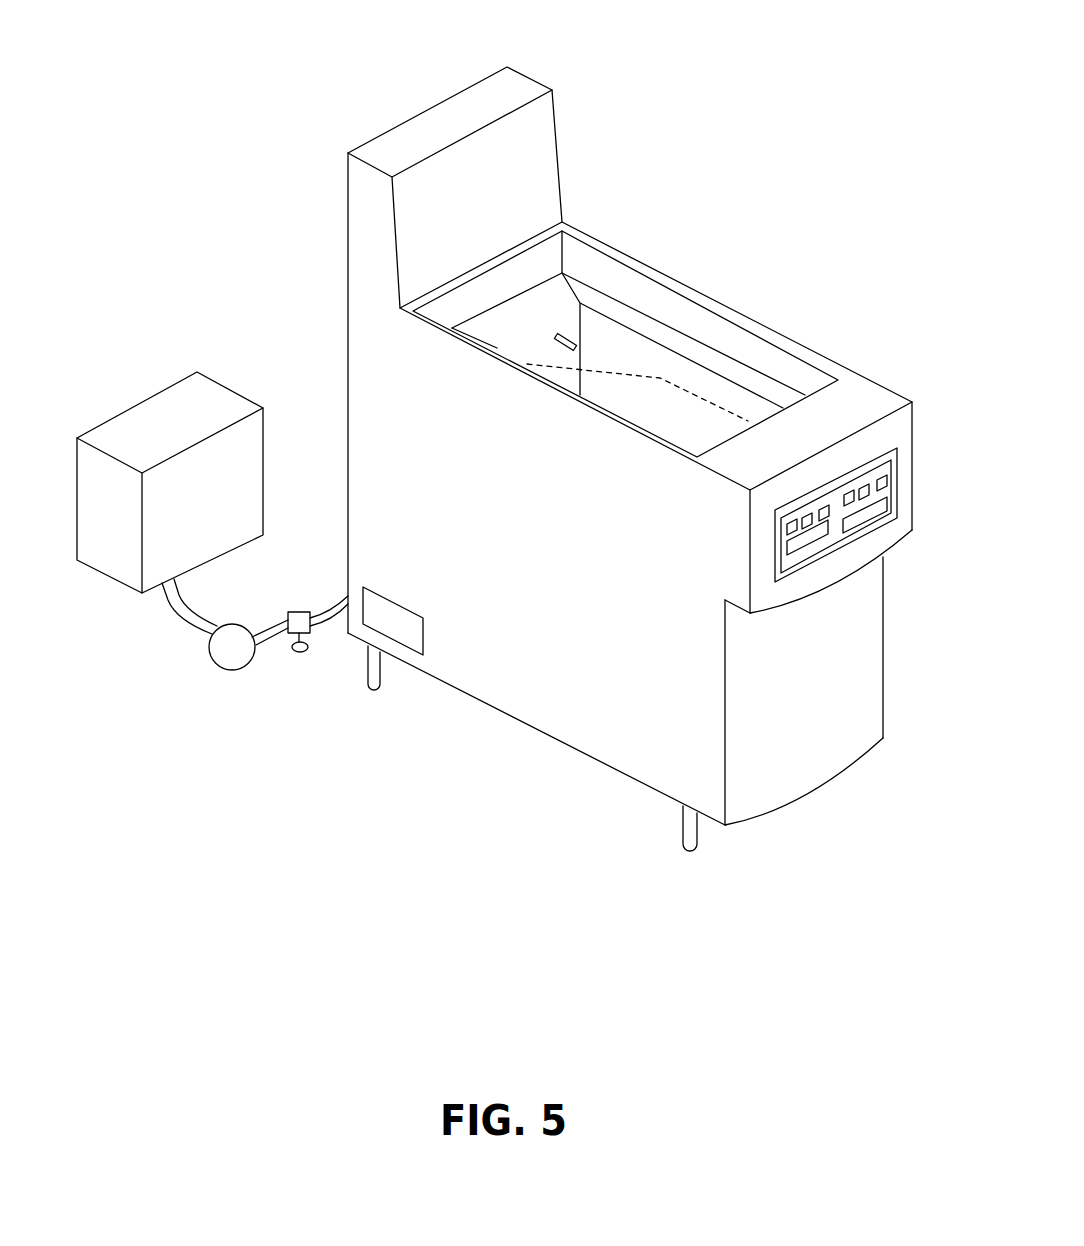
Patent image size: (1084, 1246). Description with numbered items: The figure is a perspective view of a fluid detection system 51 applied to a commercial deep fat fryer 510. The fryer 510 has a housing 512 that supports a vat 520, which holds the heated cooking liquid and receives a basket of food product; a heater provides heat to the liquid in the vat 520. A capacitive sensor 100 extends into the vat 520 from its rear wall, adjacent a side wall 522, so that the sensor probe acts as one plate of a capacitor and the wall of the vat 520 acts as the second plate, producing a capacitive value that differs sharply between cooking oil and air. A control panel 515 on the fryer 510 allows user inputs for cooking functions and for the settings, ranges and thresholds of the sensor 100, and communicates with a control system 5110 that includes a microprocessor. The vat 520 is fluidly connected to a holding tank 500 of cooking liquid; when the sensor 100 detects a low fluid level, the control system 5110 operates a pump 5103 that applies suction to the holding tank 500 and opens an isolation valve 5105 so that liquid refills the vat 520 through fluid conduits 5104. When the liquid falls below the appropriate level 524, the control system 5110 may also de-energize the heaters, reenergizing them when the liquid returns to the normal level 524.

The fluid detection system 51 is at (694, 98).
The capacitive sensor 100 is at (563, 332).
The holding tank 500 is at (120, 557).
The deep fat fryer 510 is at (493, 643).
The housing 512 is at (555, 718).
The control panel 515 is at (835, 532).
The vat 520 is at (725, 364).
The side wall 522 is at (710, 427).
The appropriate level 524 is at (637, 365).
The pump 5103 is at (223, 657).
The fluid conduits 5104 is at (268, 620).
The isolation valve 5105 is at (290, 637).
The control system 5110 is at (378, 620).